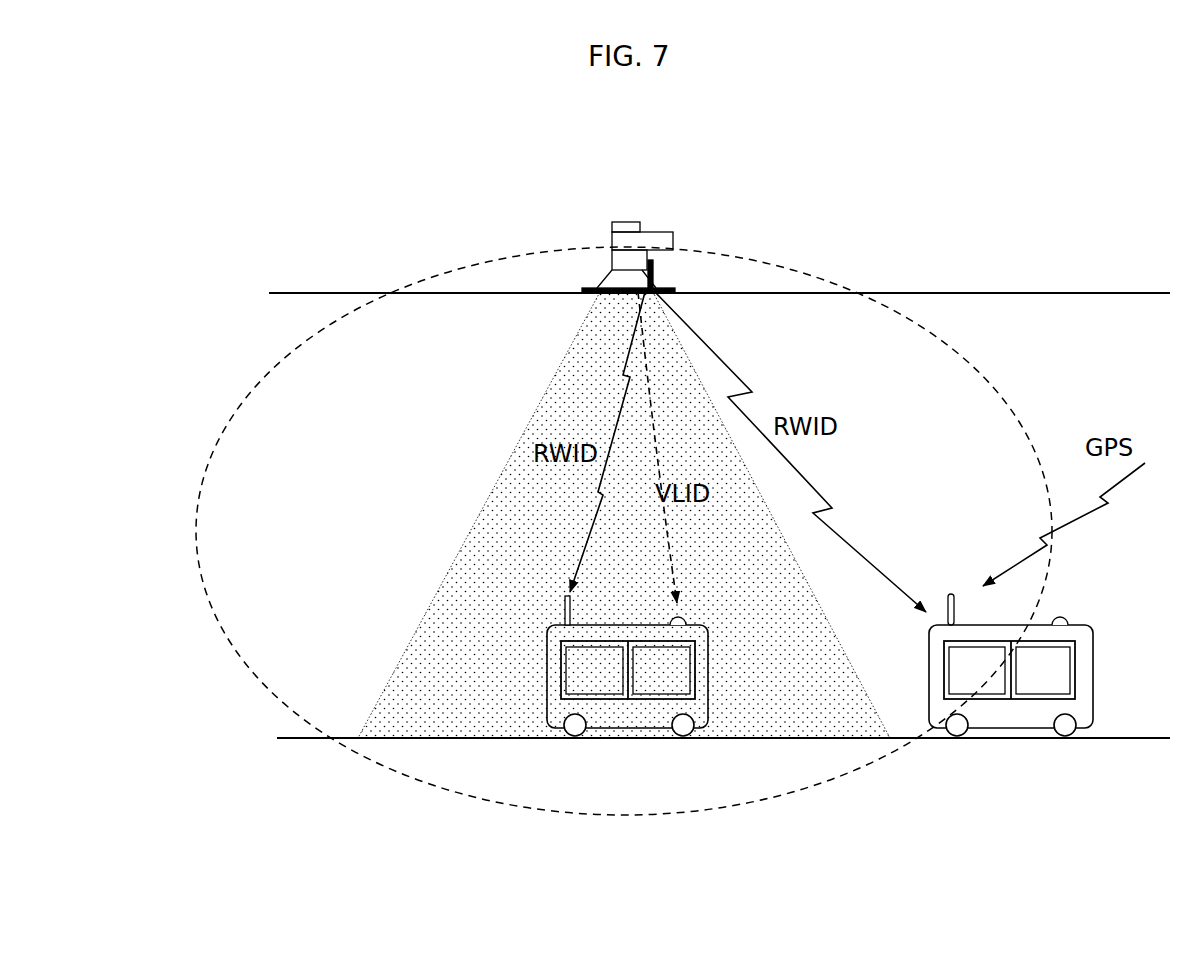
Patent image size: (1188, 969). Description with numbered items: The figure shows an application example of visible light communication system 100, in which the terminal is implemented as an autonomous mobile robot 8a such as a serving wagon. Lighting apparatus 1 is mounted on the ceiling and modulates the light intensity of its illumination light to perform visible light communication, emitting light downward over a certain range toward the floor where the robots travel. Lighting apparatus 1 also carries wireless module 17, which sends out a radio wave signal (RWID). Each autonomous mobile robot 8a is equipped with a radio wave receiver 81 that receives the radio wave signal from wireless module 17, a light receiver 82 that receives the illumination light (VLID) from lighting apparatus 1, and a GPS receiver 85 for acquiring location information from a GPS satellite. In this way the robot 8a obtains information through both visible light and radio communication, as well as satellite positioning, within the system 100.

The visible light communication system 100 is at (282, 258).
The lighting apparatus 1 is at (606, 266).
The wireless module 17 is at (655, 273).
The radio wave receiver 81 is at (708, 623).
The GPS receiver 85 is at (565, 606).
The light receiver 82 is at (683, 617).
The autonomous mobile robot 8a is at (707, 712).